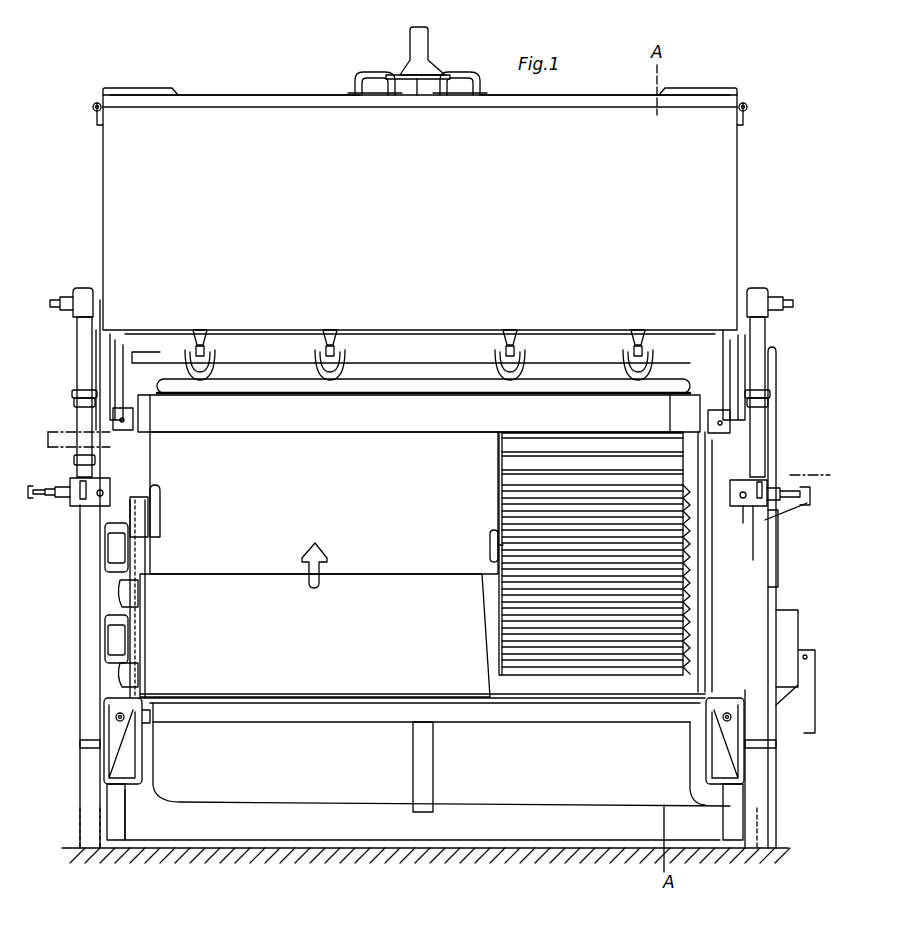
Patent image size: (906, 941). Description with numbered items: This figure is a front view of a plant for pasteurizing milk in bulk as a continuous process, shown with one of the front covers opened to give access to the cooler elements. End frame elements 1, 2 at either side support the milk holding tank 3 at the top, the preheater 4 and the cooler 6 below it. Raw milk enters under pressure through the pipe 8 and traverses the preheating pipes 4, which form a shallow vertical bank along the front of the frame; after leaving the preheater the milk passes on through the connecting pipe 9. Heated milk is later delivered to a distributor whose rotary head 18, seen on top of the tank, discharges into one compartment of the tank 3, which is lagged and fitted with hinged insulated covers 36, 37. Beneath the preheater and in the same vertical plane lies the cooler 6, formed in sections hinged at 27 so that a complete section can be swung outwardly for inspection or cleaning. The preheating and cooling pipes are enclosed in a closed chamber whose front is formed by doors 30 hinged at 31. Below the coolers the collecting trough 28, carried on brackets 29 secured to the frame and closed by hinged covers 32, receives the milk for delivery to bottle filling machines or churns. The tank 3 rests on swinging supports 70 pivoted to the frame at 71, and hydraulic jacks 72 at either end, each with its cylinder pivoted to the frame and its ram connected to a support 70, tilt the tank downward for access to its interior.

The end frame element 1 is at (80, 680).
The end frame element 2 is at (768, 805).
The milk holding tank 3 is at (740, 204).
The preheater 4 is at (503, 477).
The cooler 6 is at (505, 617).
The pipe 8 is at (822, 478).
The connecting pipe 9 is at (55, 432).
The rotary head 18 is at (413, 54).
The hinge 27 is at (112, 585).
The collecting trough 28 is at (383, 796).
The brackets 29 is at (120, 765).
The doors 30 is at (324, 503).
The hinge 31 is at (160, 516).
The hinged covers 32 is at (321, 613).
The hinged insulated cover 36 is at (226, 96).
The hinged insulated cover 37 is at (619, 102).
The swinging supports 70 is at (92, 363).
The pivot 71 is at (753, 425).
The hydraulic jacks 72 is at (760, 453).